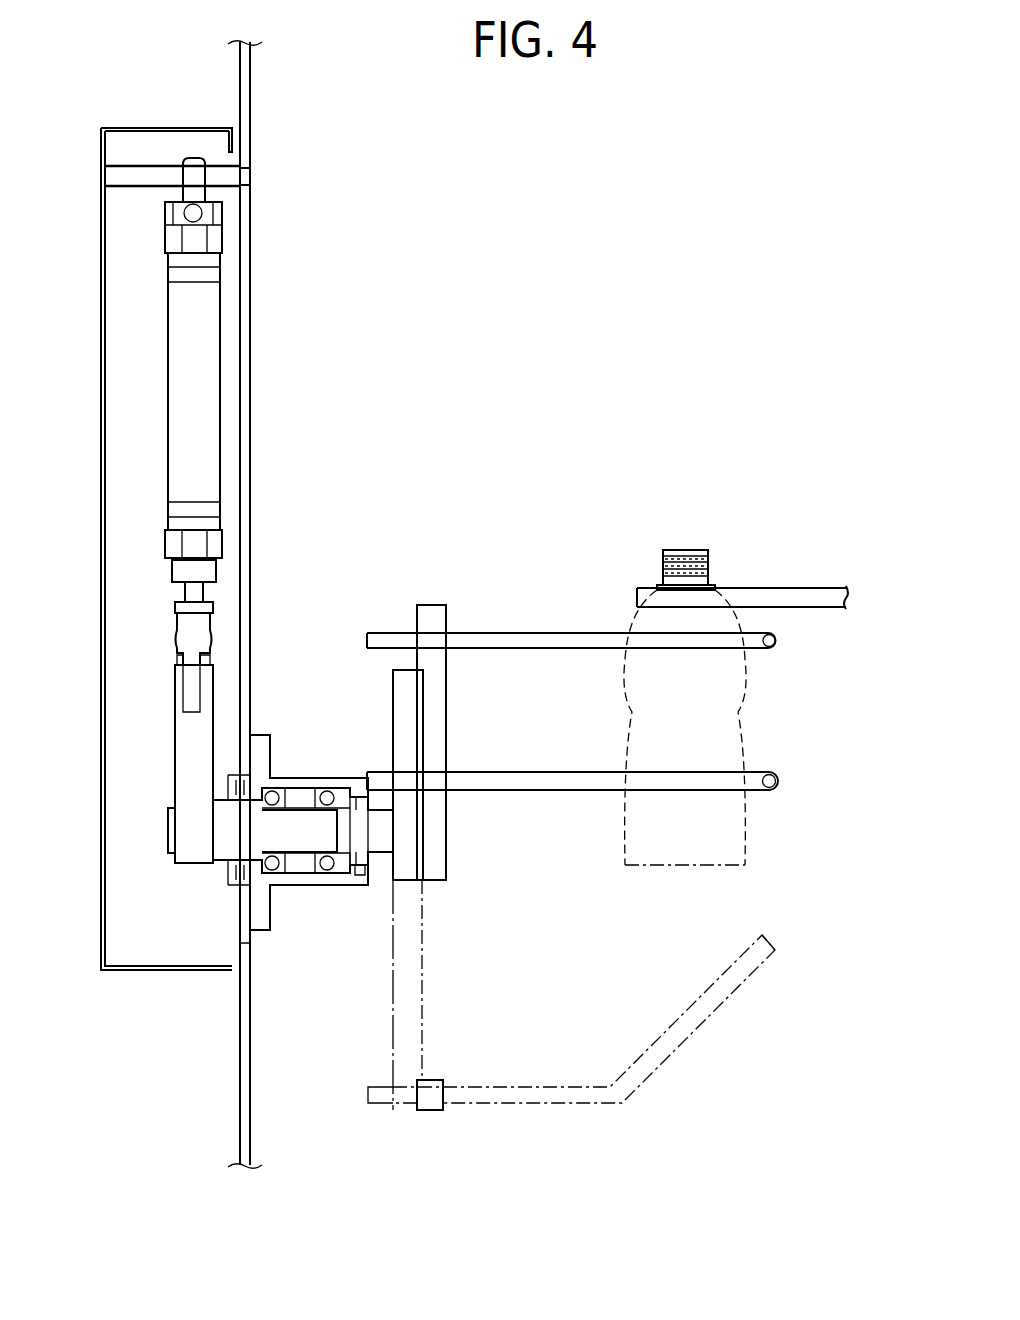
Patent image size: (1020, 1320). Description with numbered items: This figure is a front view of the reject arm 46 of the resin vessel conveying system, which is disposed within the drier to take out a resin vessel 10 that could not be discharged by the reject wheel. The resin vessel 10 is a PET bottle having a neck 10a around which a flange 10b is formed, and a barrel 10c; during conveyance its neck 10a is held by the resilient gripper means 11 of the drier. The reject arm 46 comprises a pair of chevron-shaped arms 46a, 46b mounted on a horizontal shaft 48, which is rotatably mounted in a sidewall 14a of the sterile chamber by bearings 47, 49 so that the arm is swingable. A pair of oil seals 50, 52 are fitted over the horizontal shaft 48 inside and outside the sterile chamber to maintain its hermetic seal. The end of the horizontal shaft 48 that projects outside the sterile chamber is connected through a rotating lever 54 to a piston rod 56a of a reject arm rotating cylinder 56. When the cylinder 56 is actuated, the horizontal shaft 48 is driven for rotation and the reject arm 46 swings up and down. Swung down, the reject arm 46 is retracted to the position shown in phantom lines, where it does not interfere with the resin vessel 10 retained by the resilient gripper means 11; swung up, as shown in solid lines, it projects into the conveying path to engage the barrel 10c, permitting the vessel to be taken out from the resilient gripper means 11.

The resin vessel 10 is at (630, 710).
The neck 10a is at (663, 553).
The flange 10b is at (657, 585).
The barrel 10c is at (620, 830).
The resilient gripper means 11 is at (787, 588).
The sidewall 14a is at (250, 315).
The reject arm 46 is at (860, 660).
The chevron-shaped arm 46a is at (757, 648).
The chevron-shaped arm 46b is at (757, 772).
The bearing 47 is at (273, 795).
The horizontal shaft 48 is at (227, 827).
The bearing 49 is at (331, 790).
The oil seal 50 is at (228, 862).
The oil seal 52 is at (358, 874).
The rotating lever 54 is at (173, 752).
The reject arm rotating cylinder 56 is at (168, 367).
The piston rod 56a is at (177, 620).